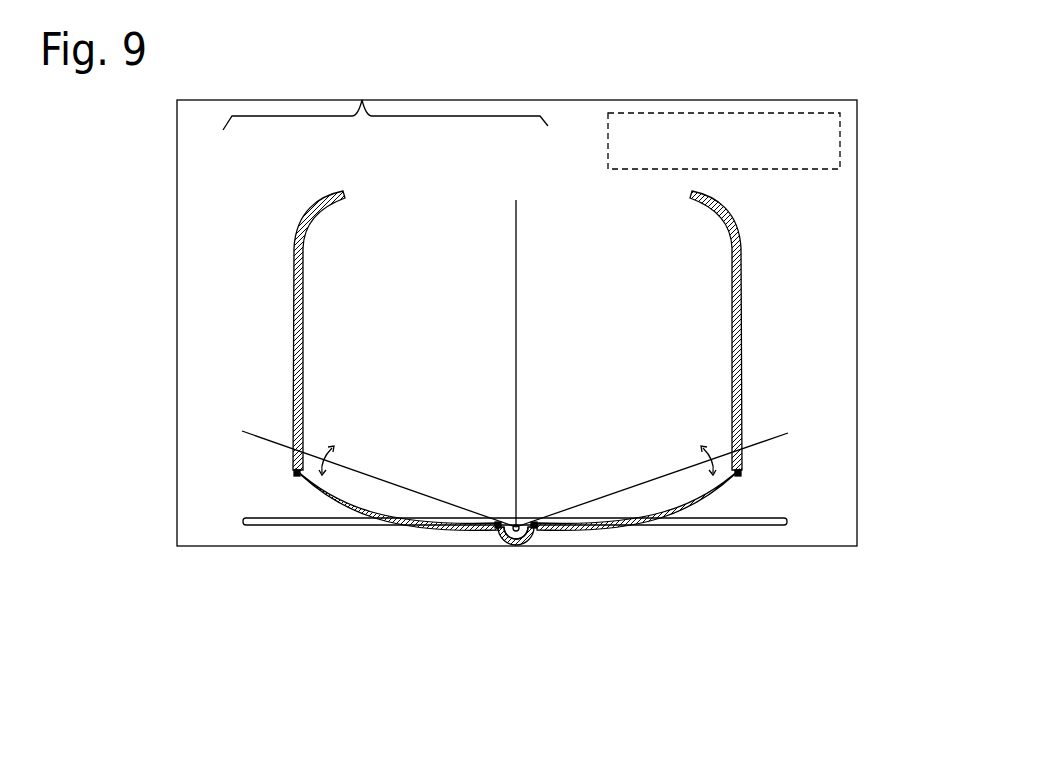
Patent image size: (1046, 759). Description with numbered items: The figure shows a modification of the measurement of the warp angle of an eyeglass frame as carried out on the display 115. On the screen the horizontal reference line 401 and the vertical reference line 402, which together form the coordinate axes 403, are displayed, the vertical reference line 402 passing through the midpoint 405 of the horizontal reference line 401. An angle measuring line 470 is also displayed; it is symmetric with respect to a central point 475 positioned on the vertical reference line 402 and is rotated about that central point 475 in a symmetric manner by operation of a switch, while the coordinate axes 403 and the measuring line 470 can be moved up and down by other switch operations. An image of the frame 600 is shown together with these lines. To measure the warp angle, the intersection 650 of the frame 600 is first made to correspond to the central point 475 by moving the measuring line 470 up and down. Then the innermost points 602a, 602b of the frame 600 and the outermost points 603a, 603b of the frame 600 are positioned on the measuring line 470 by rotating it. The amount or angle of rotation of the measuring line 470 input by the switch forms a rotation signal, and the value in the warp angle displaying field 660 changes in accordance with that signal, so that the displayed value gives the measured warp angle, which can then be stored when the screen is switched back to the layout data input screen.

The display 115 is at (177, 320).
The frame 600 is at (743, 298).
The horizontal reference line 401 is at (258, 537).
The vertical reference line 402 is at (516, 235).
The coordinate axes 403 is at (362, 100).
The midpoint 405 is at (510, 520).
The angle measuring line 470 is at (677, 470).
The central point 475 is at (528, 522).
The innermost point 602a is at (536, 530).
The innermost point 602b is at (500, 528).
The outermost point 603a is at (737, 476).
The outermost point 603b is at (296, 476).
The intersection 650 is at (513, 547).
The warp angle displaying field 660 is at (665, 112).